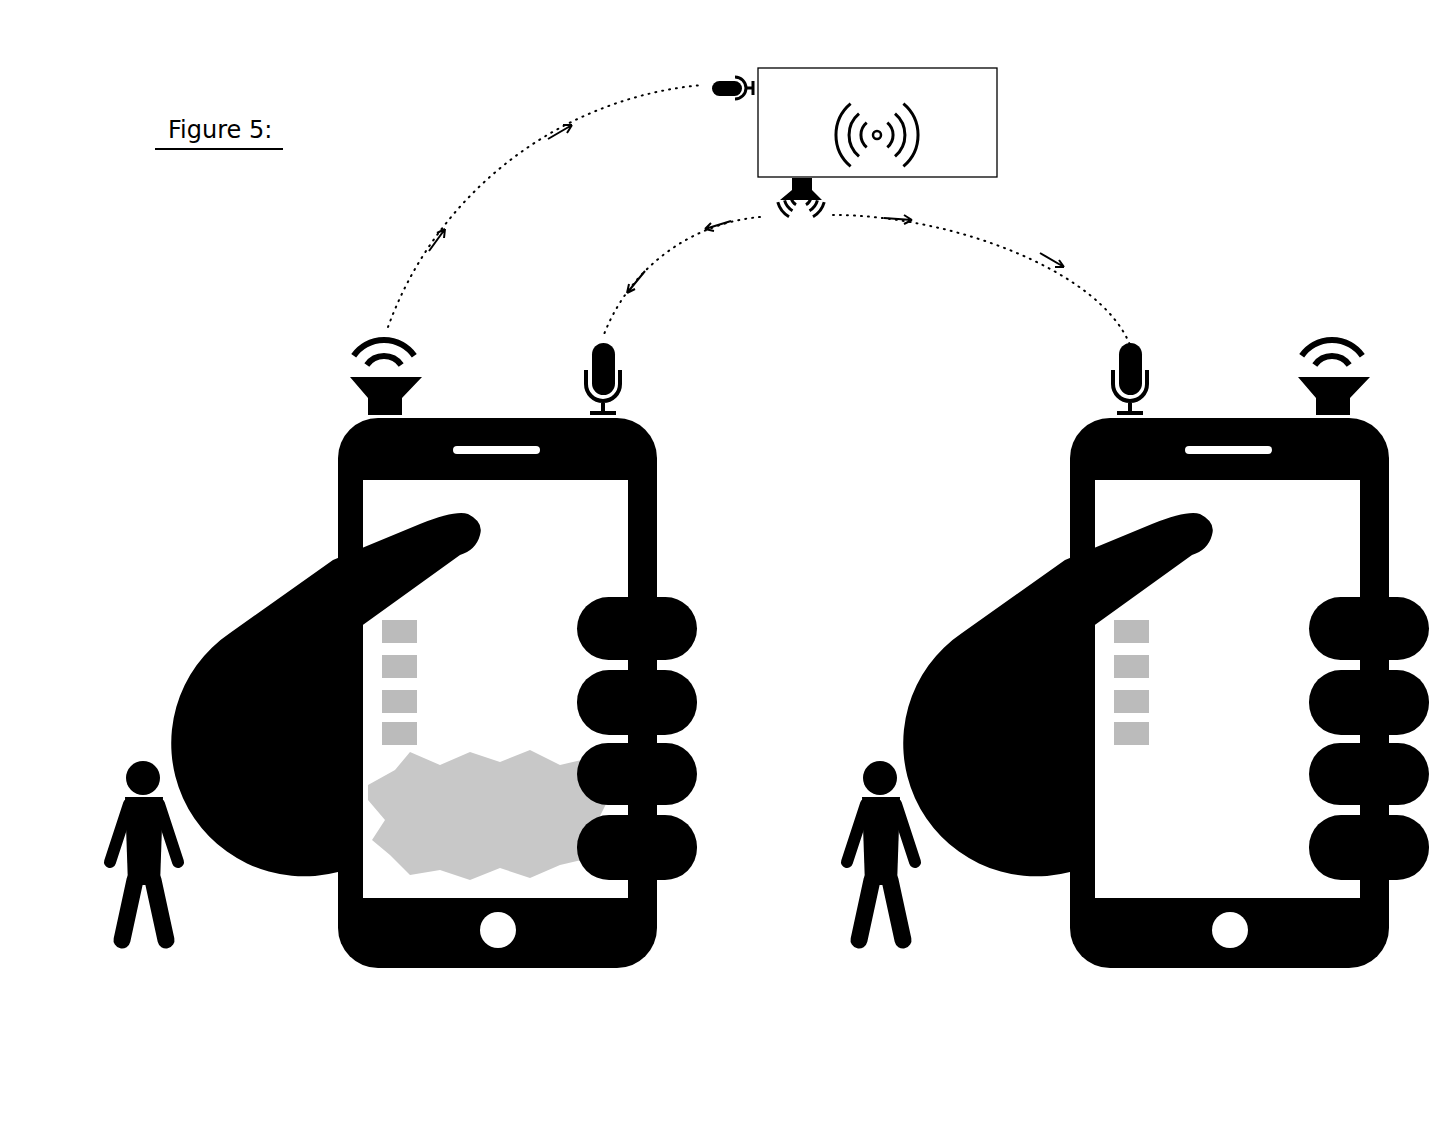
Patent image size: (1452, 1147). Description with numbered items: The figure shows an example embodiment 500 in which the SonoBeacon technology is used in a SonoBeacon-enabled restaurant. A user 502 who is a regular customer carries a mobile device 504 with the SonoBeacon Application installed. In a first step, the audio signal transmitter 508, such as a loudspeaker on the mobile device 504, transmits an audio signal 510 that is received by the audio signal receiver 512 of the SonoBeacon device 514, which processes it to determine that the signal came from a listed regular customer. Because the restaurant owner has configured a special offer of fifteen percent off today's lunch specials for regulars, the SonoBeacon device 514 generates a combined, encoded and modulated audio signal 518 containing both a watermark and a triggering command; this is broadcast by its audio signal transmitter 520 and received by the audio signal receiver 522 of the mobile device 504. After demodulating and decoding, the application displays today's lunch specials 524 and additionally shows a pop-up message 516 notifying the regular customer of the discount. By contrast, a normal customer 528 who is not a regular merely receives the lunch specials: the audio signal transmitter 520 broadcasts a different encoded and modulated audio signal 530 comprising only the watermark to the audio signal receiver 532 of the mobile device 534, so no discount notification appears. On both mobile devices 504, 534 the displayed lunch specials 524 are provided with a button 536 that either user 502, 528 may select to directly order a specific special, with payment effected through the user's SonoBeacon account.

The example embodiment 500 is at (213, 218).
The user 502 is at (144, 873).
The mobile device 504 is at (497, 693).
The audio signal transmitter 508 is at (370, 377).
The audio signal 510 is at (545, 206).
The audio signal receiver 512 is at (732, 100).
The SonoBeacon device 514 is at (877, 122).
The pop-up message 516 is at (488, 815).
The combined, encoded and modulated audio signal 518 is at (681, 277).
The audio signal transmitter 520 is at (801, 209).
The audio signal receiver 522 is at (588, 378).
The today's lunch specials 524 is at (865, 689).
The normal customer 528 is at (881, 873).
The encoded and modulated audio signal 530 is at (981, 280).
The audio signal receiver 532 is at (1112, 378).
The mobile device 534 is at (1229, 693).
The button 536 is at (765, 682).